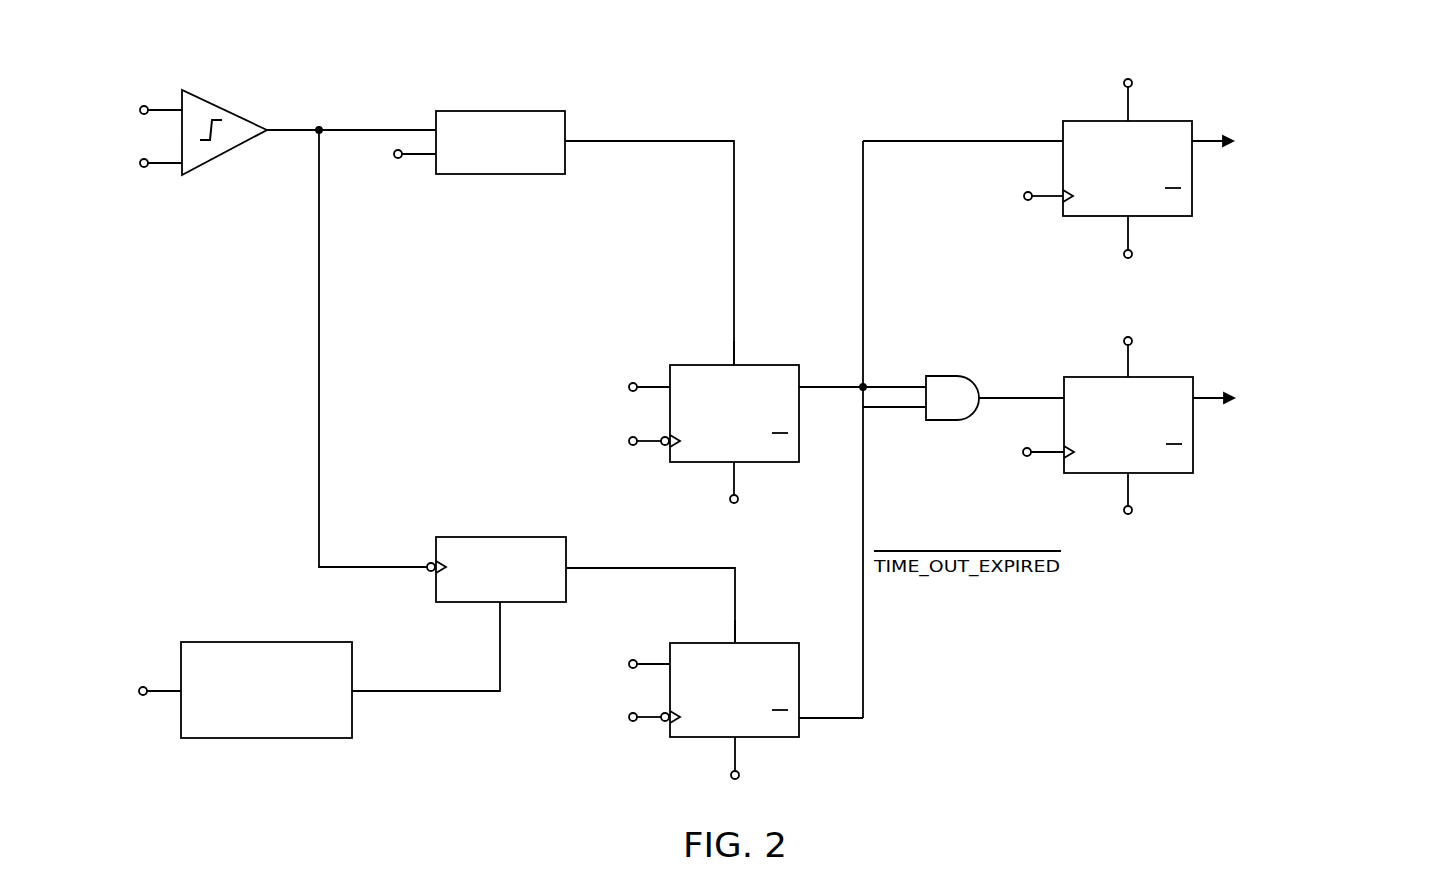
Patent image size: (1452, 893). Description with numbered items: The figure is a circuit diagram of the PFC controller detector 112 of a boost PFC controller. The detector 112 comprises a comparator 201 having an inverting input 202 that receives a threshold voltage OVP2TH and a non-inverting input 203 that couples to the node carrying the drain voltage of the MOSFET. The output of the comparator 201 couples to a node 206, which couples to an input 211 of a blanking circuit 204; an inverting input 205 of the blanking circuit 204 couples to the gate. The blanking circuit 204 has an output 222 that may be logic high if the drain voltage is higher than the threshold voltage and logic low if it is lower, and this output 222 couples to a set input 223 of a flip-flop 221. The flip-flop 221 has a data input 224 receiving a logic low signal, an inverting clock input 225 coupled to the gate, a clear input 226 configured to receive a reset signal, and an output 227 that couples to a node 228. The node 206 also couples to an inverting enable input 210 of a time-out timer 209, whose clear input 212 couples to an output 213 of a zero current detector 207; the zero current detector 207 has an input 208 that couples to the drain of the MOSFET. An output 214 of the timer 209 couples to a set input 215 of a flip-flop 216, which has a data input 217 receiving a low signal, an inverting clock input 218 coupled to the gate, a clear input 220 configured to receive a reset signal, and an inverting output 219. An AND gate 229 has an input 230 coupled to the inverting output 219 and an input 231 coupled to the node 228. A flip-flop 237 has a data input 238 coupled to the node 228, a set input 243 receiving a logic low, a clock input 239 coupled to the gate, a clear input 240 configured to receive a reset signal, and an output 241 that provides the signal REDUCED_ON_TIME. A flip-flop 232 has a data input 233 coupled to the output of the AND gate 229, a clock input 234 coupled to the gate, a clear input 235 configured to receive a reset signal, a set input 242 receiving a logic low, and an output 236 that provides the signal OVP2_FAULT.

The PFC controller detector 112 is at (634, 64).
The comparator 201 is at (224, 107).
The inverting input 202 is at (170, 107).
The non-inverting input 203 is at (170, 167).
The blanking circuit 204 is at (497, 110).
The inverting input 205 is at (428, 158).
The node 206 is at (317, 124).
The zero current detector 207 is at (264, 641).
The input 208 is at (167, 695).
The time-out timer 209 is at (468, 536).
The inverting enable input 210 is at (419, 565).
The input 211 is at (430, 128).
The clear input 212 is at (497, 611).
The output 213 is at (366, 695).
The output 214 is at (575, 565).
The set input 215 is at (739, 632).
The flip-flop 216 is at (700, 641).
The data input 217 is at (653, 662).
The inverting clock input 218 is at (652, 722).
The inverting output 219 is at (810, 722).
The clear input 220 is at (739, 752).
The flip-flop 221 is at (700, 363).
The output 222 is at (575, 147).
The set input 223 is at (738, 353).
The data input 224 is at (653, 385).
The inverting clock input 225 is at (652, 445).
The clear input 226 is at (738, 476).
The output 227 is at (808, 391).
The node 228 is at (858, 382).
The AND gate 229 is at (948, 374).
The input 230 is at (916, 412).
The input 231 is at (918, 383).
The flip-flop 232 is at (1095, 375).
The data input 233 is at (1055, 395).
The clock input 234 is at (1055, 456).
The clear input 235 is at (1133, 486).
The output 236 is at (1205, 403).
The flip-flop 237 is at (1095, 119).
The data input 238 is at (1055, 139).
The clock input 239 is at (1055, 201).
The clear input 240 is at (1132, 232).
The output 241 is at (1203, 146).
The set input 242 is at (1131, 366).
The set input 243 is at (1131, 111).